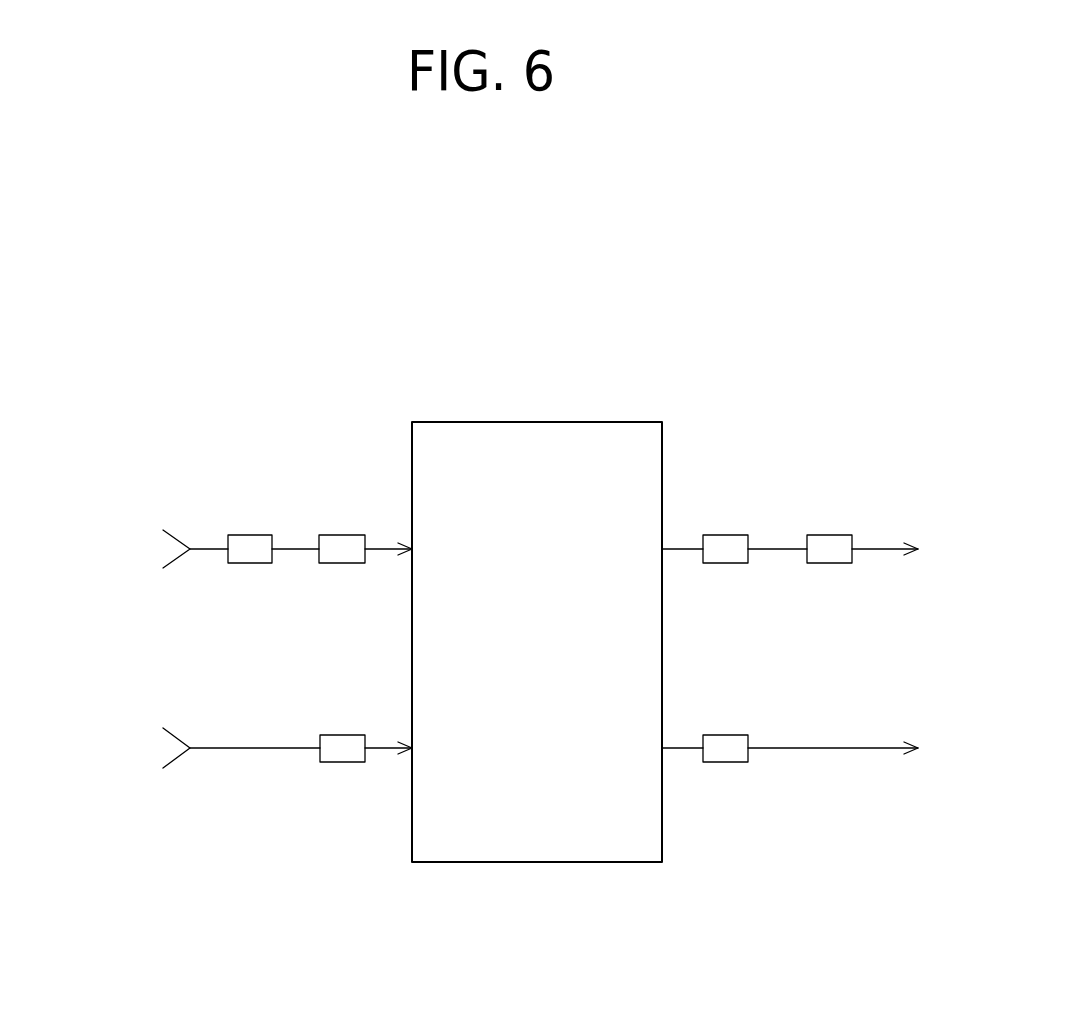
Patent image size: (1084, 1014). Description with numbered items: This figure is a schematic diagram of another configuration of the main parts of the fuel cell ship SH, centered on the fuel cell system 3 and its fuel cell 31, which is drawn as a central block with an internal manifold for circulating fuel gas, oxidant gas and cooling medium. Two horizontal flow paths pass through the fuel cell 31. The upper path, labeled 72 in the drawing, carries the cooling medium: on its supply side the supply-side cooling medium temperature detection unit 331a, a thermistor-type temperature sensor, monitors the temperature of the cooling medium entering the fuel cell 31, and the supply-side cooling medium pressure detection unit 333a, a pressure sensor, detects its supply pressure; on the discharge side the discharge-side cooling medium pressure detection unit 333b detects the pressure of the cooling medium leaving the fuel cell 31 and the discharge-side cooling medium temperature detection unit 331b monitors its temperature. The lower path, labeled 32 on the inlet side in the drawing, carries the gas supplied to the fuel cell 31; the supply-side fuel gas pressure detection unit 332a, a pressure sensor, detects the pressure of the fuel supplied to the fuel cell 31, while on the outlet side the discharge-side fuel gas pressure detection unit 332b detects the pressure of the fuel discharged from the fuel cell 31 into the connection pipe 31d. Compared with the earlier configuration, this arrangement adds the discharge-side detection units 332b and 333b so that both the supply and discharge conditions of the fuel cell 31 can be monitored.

The fuel cell ship SH is at (857, 222).
The fuel cell system 3 is at (690, 392).
The fuel cell 31 is at (541, 862).
The connection pipe 31d is at (792, 746).
The oxidant gas supply passage 32 is at (298, 746).
The cooling medium passage 72 is at (299, 548).
The supply-side cooling medium temperature detection unit 331a is at (250, 550).
The discharge-side cooling medium temperature detection unit 331b is at (828, 550).
The supply-side fuel gas pressure detection unit 332a is at (342, 752).
The discharge-side fuel gas pressure detection unit 332b is at (725, 752).
The supply-side cooling medium pressure detection unit 333a is at (342, 550).
The discharge-side cooling medium pressure detection unit 333b is at (725, 550).